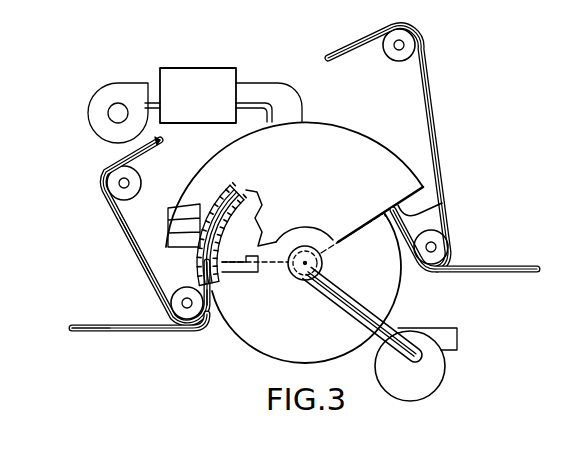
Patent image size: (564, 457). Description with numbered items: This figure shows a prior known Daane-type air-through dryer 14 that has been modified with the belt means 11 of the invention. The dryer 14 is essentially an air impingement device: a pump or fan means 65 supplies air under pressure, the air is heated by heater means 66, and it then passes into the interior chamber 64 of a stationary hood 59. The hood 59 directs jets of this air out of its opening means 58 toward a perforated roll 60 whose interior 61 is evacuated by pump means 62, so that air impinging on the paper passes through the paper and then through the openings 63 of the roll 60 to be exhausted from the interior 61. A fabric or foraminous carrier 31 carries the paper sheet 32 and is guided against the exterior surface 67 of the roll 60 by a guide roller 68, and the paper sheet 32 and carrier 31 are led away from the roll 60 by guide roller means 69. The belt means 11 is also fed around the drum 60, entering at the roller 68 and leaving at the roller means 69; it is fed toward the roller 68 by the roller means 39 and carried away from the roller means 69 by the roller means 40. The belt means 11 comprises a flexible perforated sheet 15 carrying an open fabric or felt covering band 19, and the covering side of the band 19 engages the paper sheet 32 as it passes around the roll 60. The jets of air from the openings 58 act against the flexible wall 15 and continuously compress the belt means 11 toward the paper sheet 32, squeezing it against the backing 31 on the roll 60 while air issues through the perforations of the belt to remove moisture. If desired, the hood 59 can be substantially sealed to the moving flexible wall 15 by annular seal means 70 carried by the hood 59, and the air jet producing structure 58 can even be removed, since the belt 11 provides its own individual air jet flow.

The belt means 11 is at (444, 158).
The air-through dryer 14 is at (455, 131).
The flexible perforated sheet 15 is at (125, 232).
The covering band 19 is at (145, 258).
The fabric or foraminous carrier 31 is at (123, 333).
The paper sheet 32 is at (105, 326).
The roller means 39 is at (107, 190).
The roller means 40 is at (392, 58).
The opening means 58 is at (185, 218).
The stationary hood 59 is at (353, 148).
The perforated roll 60 is at (283, 331).
The interior of roll 61 is at (268, 212).
The pump means 62 is at (427, 338).
The openings of roll 63 is at (250, 193).
The interior chamber 64 is at (200, 203).
The pump or fan means 65 is at (113, 92).
The heater means 66 is at (207, 77).
The exterior surface of roll 67 is at (225, 330).
The guide roller 68 is at (197, 300).
The guide roller means 69 is at (447, 254).
The annular seal means 70 is at (443, 203).